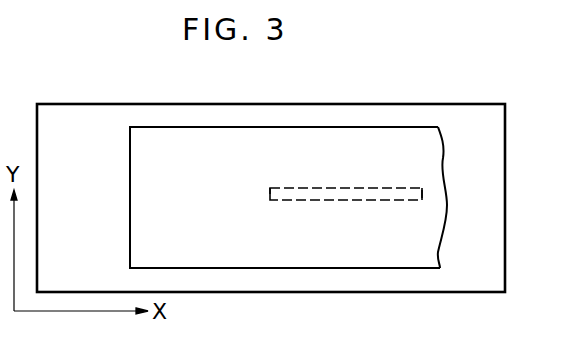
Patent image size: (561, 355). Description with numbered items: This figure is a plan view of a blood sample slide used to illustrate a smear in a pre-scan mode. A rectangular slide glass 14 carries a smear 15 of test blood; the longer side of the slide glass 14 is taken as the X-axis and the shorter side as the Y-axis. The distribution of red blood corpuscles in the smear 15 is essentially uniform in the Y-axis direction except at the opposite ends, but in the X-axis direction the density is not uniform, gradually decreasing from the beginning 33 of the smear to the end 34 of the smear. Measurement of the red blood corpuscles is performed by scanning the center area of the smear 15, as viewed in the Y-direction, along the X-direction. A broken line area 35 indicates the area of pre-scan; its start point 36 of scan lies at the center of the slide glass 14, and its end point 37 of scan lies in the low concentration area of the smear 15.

The slide glass 14 is at (378, 104).
The smear 15 is at (250, 127).
The beginning of the smear 33 is at (130, 135).
The end of the smear 34 is at (443, 147).
The broken line area 35 is at (308, 188).
The start point of scan 36 is at (270, 193).
The end point of scan 37 is at (422, 190).